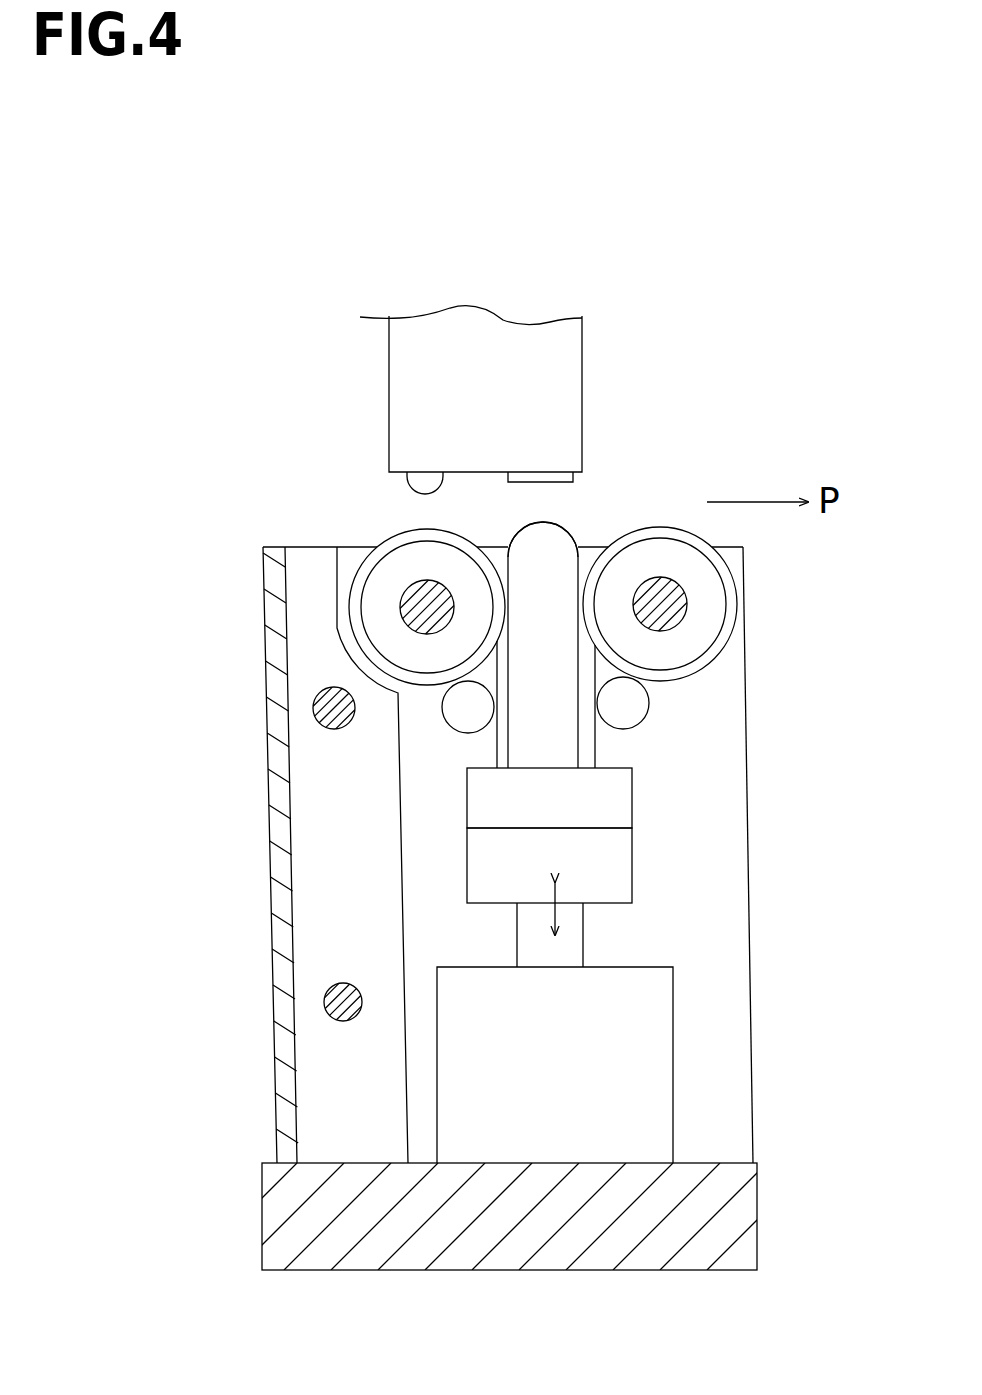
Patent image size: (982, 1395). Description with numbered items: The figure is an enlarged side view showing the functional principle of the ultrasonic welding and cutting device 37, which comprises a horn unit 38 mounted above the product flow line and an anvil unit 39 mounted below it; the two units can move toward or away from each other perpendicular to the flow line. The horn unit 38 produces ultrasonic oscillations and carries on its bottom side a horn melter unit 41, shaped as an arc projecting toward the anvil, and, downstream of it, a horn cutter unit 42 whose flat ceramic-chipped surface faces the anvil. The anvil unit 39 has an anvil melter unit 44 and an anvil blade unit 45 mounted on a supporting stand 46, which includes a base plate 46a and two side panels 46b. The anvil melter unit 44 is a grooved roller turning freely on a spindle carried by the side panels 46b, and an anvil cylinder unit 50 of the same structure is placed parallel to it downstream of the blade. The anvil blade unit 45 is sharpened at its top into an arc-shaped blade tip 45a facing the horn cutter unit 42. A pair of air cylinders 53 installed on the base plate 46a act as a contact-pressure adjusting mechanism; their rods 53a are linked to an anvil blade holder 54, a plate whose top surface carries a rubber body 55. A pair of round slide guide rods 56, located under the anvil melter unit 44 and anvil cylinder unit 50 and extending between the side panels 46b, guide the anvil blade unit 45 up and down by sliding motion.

The ultrasonic welding and cutting device 37 is at (381, 278).
The horn unit 38 is at (472, 315).
The horn melter unit 41 is at (405, 483).
The horn cutter unit 42 is at (565, 490).
The anvil melter unit 44 is at (400, 530).
The anvil blade unit 45 is at (562, 543).
The blade tip 45a is at (522, 522).
The anvil cylinder unit 50 is at (727, 578).
The slide guide rods 56 is at (640, 703).
The rubber body 55 is at (622, 802).
The anvil blade holder 54 is at (618, 872).
The rods 53a is at (583, 915).
The air cylinders 53 is at (657, 1032).
The anvil unit 39 is at (270, 903).
The supporting stand 46 is at (277, 1083).
The base plate 46a is at (742, 1195).
The side panels 46b is at (730, 962).